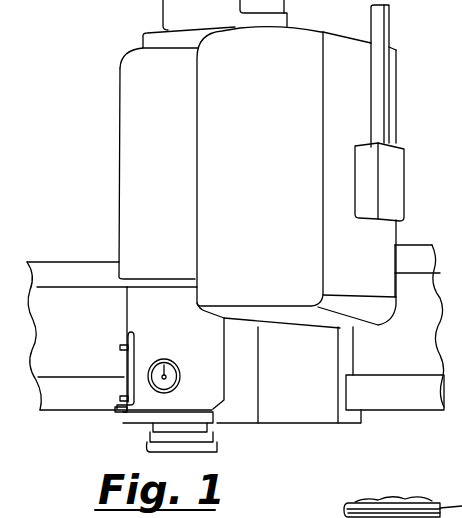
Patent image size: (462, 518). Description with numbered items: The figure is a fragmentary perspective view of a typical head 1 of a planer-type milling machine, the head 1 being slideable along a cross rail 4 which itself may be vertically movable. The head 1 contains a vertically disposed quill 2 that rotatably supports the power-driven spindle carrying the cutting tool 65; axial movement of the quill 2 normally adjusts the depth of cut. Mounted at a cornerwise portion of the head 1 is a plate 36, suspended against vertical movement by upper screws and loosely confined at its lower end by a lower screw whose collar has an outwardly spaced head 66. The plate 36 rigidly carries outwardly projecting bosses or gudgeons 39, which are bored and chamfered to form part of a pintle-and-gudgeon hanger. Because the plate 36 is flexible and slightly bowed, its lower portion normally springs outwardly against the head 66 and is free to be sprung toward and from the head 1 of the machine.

The head 1 is at (146, 143).
The quill 2 is at (204, 424).
The rail 4 is at (75, 397).
The plate 36 is at (133, 360).
The gudgeons 39 is at (121, 343).
The cutting tool 65 is at (157, 443).
The head of collar 66 is at (117, 411).